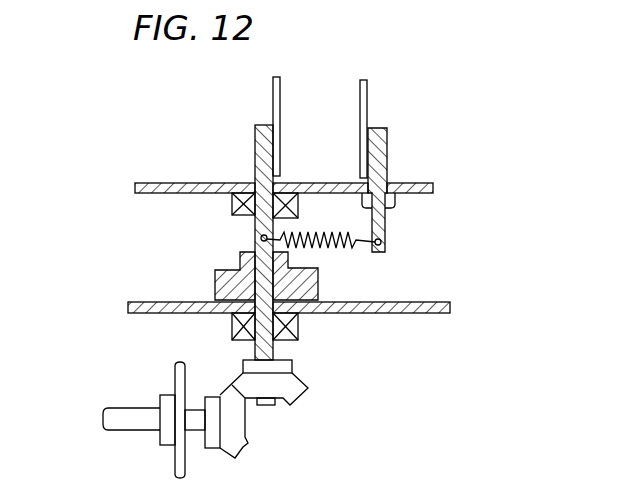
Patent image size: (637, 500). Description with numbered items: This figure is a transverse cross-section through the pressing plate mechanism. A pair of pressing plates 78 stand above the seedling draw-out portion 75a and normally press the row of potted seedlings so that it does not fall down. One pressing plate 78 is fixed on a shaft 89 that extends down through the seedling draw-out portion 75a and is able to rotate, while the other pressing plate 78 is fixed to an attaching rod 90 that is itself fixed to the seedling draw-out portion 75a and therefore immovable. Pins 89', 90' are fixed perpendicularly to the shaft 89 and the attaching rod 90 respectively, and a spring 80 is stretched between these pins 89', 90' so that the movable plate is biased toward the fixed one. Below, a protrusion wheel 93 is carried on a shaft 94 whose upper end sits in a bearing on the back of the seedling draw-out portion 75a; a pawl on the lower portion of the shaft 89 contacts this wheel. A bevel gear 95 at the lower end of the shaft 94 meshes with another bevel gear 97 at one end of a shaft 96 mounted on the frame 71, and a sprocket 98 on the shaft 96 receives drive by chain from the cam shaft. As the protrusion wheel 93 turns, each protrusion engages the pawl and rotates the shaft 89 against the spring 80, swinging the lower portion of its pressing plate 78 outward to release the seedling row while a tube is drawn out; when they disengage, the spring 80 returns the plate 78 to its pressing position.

The seedling draw-out portion 75a is at (150, 183).
The frame 71 is at (153, 302).
The pressing plate 78 is at (281, 86).
The shaft 89 is at (238, 228).
The pin 89' is at (228, 232).
The attaching rod 90 is at (395, 177).
The pin 90' is at (410, 238).
The spring 80 is at (318, 238).
The protrusion wheel 93 is at (318, 282).
The shaft 94 is at (275, 343).
The bevel gear 95 is at (300, 397).
The shaft 96 is at (190, 410).
The bevel gear 97 is at (248, 443).
The sprocket 98 is at (175, 372).